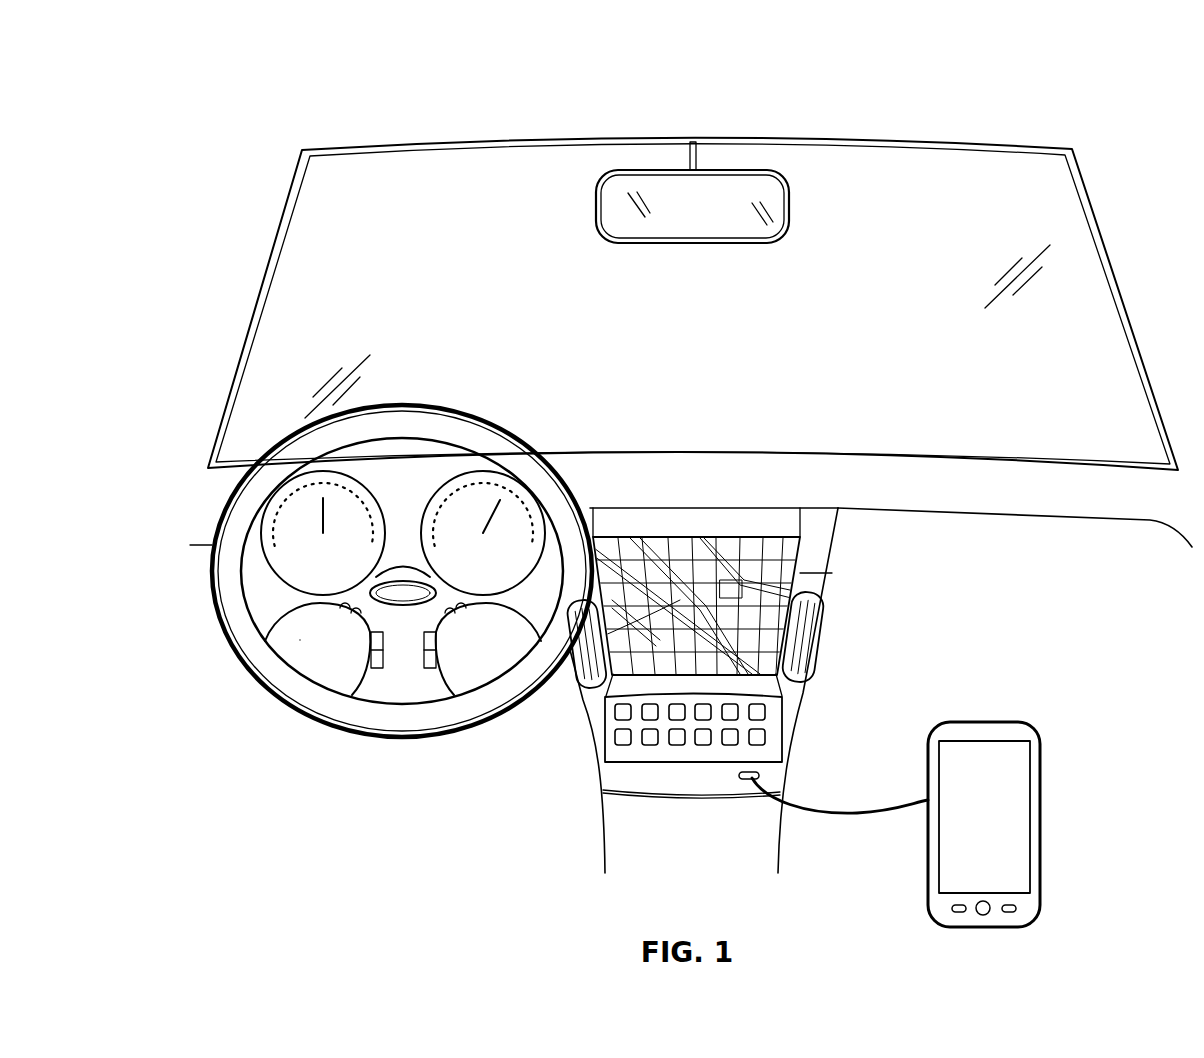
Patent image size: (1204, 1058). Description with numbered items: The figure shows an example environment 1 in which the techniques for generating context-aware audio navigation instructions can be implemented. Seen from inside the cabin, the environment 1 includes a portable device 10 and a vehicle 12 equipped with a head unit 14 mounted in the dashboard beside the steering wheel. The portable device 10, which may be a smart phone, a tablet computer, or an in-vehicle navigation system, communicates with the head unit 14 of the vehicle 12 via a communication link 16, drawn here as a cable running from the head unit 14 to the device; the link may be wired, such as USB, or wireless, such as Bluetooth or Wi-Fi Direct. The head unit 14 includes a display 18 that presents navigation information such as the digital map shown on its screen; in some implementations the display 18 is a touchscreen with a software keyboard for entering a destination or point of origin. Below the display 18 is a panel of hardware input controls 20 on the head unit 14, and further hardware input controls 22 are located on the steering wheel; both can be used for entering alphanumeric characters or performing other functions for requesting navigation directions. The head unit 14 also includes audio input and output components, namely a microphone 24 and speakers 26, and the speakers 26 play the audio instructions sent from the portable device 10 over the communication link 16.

The environment 1 is at (407, 84).
The portable device 10 is at (991, 722).
The vehicle 12 is at (192, 433).
The head unit 14 is at (743, 494).
The communication link 16 is at (841, 790).
The display 18 is at (780, 560).
The hardware input controls 20 is at (612, 725).
The hardware input controls 22 is at (362, 660).
The microphone 24 is at (582, 656).
The speakers 26 is at (812, 632).